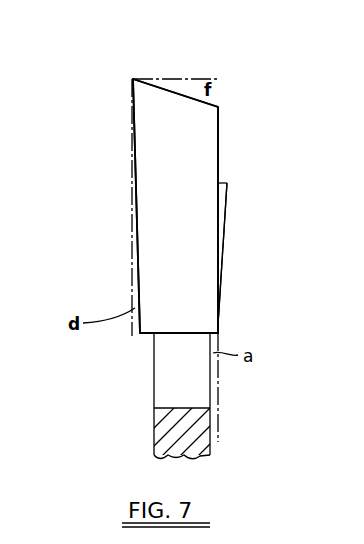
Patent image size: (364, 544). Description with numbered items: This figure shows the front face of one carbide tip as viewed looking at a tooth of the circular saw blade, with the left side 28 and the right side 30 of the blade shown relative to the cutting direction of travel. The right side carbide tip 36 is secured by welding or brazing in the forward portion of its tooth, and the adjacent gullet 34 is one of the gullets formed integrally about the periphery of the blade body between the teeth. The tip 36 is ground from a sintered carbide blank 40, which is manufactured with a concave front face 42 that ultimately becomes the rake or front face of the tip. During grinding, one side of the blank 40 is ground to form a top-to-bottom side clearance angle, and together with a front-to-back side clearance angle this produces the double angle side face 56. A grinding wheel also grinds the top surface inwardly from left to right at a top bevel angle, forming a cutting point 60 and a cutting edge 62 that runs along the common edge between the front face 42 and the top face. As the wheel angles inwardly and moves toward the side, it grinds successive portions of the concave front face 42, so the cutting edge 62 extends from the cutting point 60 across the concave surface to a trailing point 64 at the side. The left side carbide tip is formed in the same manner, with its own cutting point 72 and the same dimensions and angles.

The left side 28 is at (212, 448).
The right side 30 is at (154, 445).
The gullet 34 is at (165, 377).
The right side carbide tip 36 is at (226, 146).
The sintered carbide blank 40 is at (218, 129).
The concave front face 42 is at (152, 135).
The double angle side face 56 is at (138, 260).
The cutting point 60 is at (133, 79).
The cutting edge 62 is at (178, 92).
The trailing point 64 is at (218, 107).
The cutting point 72 is at (228, 182).